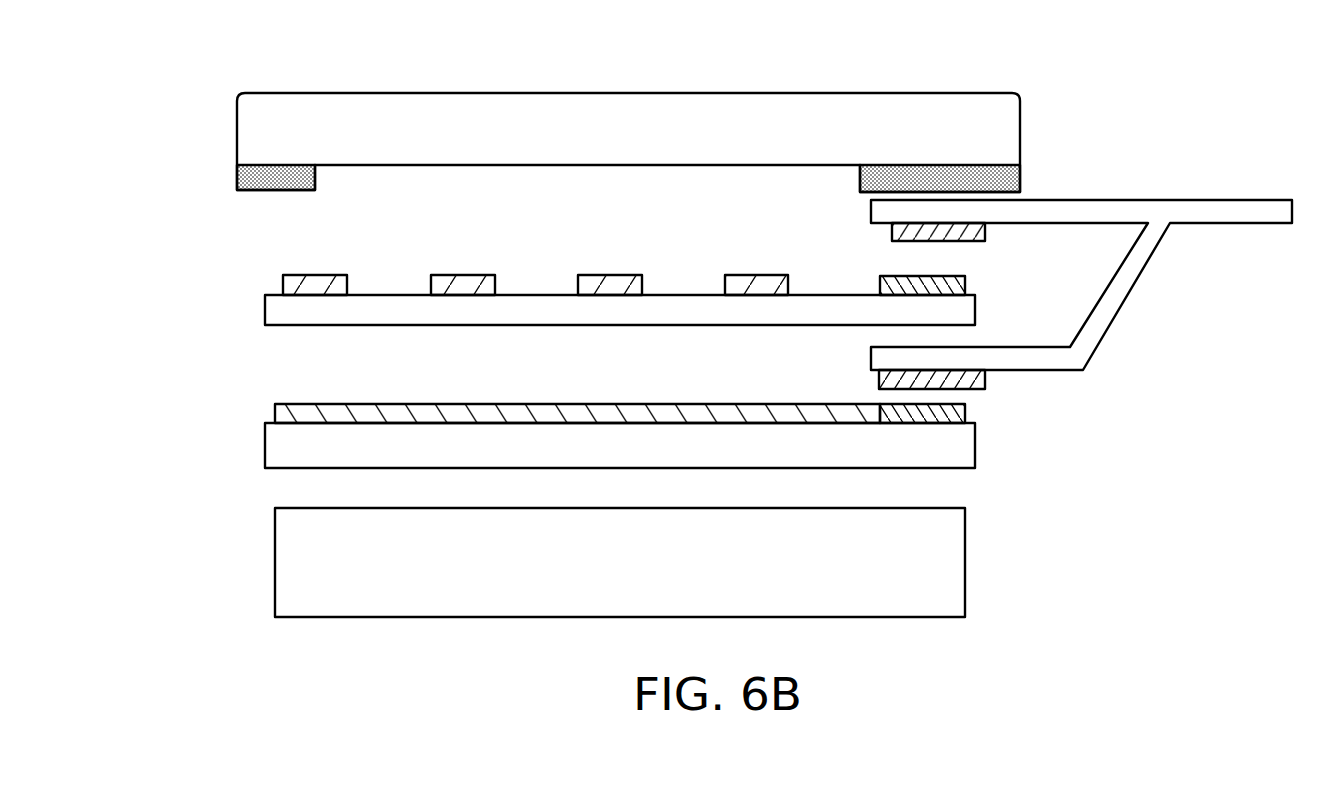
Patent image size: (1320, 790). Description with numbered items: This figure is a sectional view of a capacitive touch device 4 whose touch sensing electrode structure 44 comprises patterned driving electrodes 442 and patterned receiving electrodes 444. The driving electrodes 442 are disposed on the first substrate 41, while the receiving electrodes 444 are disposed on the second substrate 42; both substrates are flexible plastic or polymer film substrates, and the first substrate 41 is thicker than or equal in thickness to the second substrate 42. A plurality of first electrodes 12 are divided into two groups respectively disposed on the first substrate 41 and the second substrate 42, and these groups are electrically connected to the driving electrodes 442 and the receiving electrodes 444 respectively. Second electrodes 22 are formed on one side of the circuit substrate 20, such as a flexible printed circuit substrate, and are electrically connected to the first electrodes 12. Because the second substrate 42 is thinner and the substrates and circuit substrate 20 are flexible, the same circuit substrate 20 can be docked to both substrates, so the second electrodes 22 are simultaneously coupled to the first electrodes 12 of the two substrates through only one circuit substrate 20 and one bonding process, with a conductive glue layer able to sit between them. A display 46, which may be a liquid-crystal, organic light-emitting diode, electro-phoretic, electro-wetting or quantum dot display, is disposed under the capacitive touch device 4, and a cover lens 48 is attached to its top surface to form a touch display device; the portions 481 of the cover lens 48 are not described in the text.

The capacitive touch device 4 is at (1198, 168).
The first electrodes 12 is at (965, 285).
The circuit substrate 20 is at (1118, 289).
The second electrodes 22 is at (892, 232).
The first substrate 41 is at (960, 445).
The second substrate 42 is at (680, 308).
The touch sensing electrode structure 44 is at (163, 270).
The patterned driving electrodes 442 is at (290, 413).
The patterned receiving electrodes 444 is at (292, 285).
The display 46 is at (955, 560).
The cover lens 48 is at (628, 105).
The conductive portion 481 is at (277, 177).